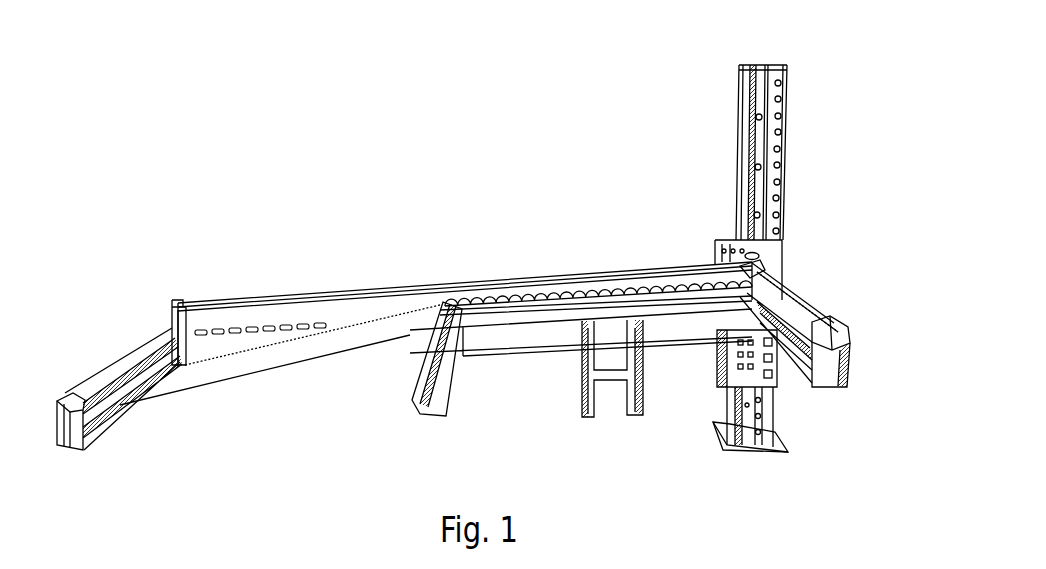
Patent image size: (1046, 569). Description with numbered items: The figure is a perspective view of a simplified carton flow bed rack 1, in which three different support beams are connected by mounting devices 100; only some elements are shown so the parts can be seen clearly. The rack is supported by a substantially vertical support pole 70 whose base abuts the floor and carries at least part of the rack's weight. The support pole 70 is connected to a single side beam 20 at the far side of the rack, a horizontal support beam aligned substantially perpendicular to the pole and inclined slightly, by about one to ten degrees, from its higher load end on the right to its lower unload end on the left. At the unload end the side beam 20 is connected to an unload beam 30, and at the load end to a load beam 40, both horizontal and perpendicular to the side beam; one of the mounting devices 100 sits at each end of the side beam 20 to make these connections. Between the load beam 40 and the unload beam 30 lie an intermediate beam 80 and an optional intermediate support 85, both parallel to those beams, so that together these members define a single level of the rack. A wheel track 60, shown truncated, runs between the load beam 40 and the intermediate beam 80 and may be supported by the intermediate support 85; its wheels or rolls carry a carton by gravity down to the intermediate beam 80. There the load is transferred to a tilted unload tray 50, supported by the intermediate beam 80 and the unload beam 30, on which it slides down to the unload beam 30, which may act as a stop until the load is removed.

The carton flow bed rack 1 is at (440, 151).
The side beam 20 is at (238, 305).
The unload beam 30 is at (120, 372).
The load beam 40 is at (790, 304).
The unload tray 50 is at (228, 380).
The wheel track 60 is at (548, 305).
The support pole 70 is at (776, 128).
The intermediate beam 80 is at (413, 394).
The intermediate support 85 is at (595, 390).
The mounting device 100 is at (168, 322).